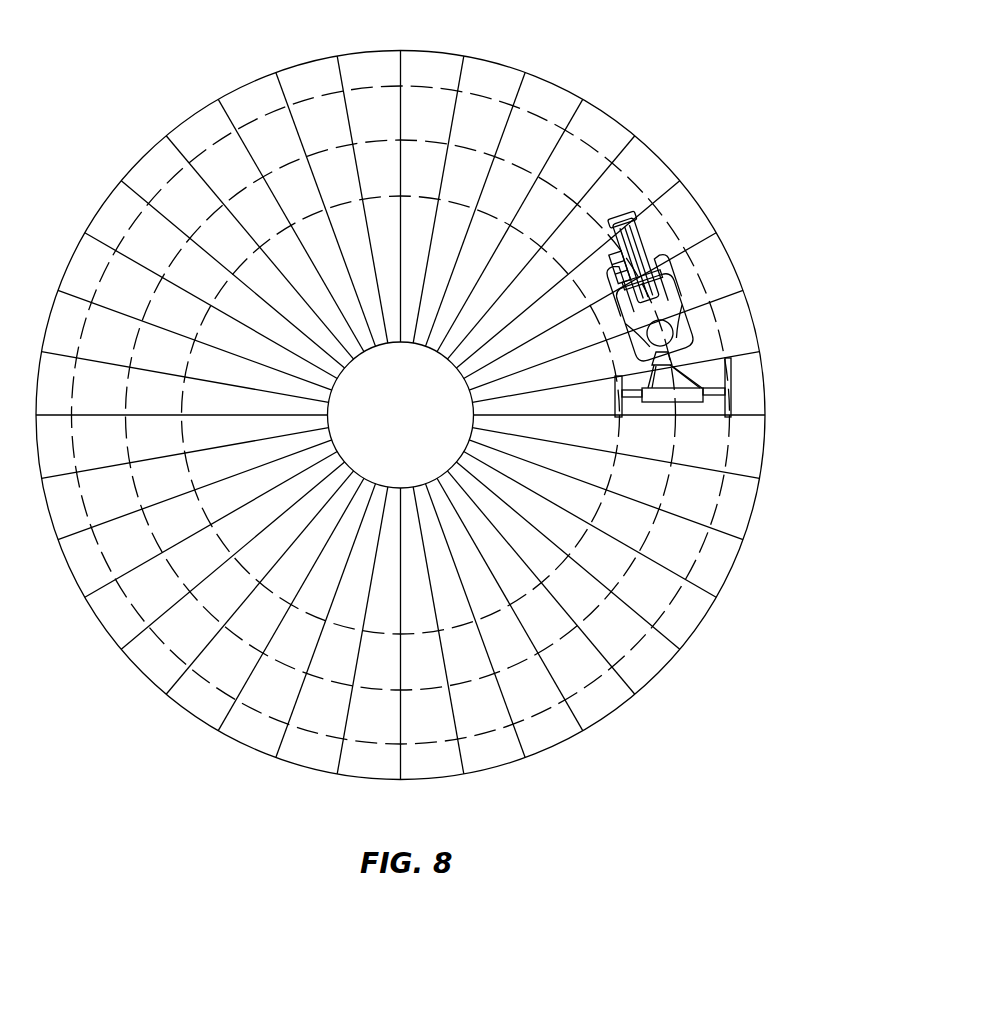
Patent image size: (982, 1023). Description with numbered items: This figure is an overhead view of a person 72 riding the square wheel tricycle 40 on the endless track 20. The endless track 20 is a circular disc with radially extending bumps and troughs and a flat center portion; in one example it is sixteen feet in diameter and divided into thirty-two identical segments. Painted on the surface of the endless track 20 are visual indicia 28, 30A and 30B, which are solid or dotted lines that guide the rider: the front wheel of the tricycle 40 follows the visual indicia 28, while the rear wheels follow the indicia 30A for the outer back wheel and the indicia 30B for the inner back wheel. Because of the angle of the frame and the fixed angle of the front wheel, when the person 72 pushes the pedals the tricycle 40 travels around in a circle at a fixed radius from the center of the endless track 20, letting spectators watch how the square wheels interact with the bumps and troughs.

The endless track 20 is at (708, 567).
The visual indicia 28 is at (595, 220).
The visual indicia for outer back wheel 30A is at (645, 193).
The visual indicia for inner back wheel 30B is at (534, 235).
The tricycle 40 is at (697, 338).
The person 72 is at (680, 305).